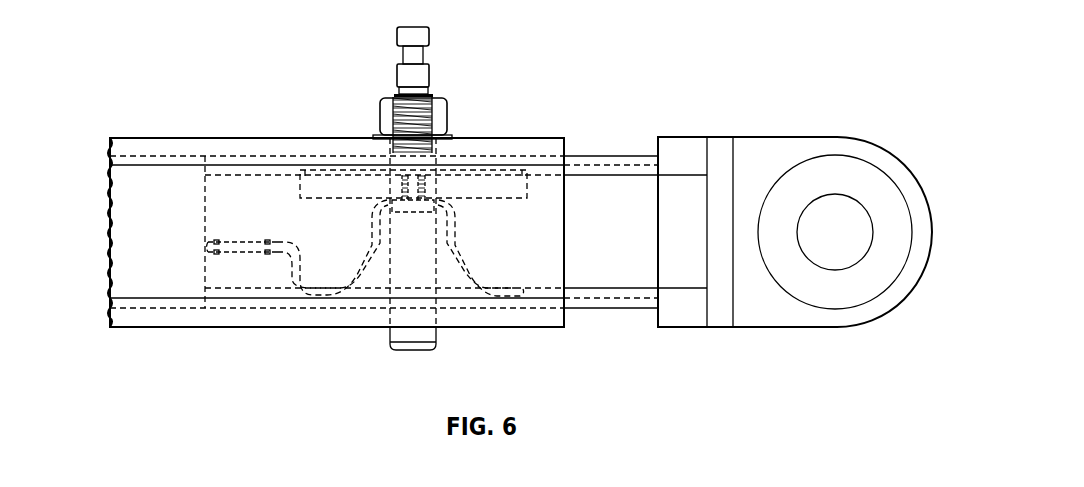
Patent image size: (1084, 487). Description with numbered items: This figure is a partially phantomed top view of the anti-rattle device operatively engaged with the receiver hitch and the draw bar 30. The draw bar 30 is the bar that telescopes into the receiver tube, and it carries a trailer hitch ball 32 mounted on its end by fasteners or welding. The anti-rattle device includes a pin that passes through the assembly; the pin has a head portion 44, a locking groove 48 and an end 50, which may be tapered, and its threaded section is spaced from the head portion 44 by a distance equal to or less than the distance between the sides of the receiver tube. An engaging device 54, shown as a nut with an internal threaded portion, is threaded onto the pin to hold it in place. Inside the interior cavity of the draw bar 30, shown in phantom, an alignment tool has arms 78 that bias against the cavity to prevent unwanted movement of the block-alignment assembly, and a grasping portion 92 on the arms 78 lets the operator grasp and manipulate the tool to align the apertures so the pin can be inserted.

The draw bar 30 is at (528, 153).
The trailer hitch ball 32 is at (857, 280).
The head portion 44 is at (430, 332).
The locking groove 48 is at (407, 53).
The end 50 is at (423, 37).
The engaging device 54 is at (440, 120).
The arms 78 is at (292, 262).
The grasping portion 92 is at (243, 255).